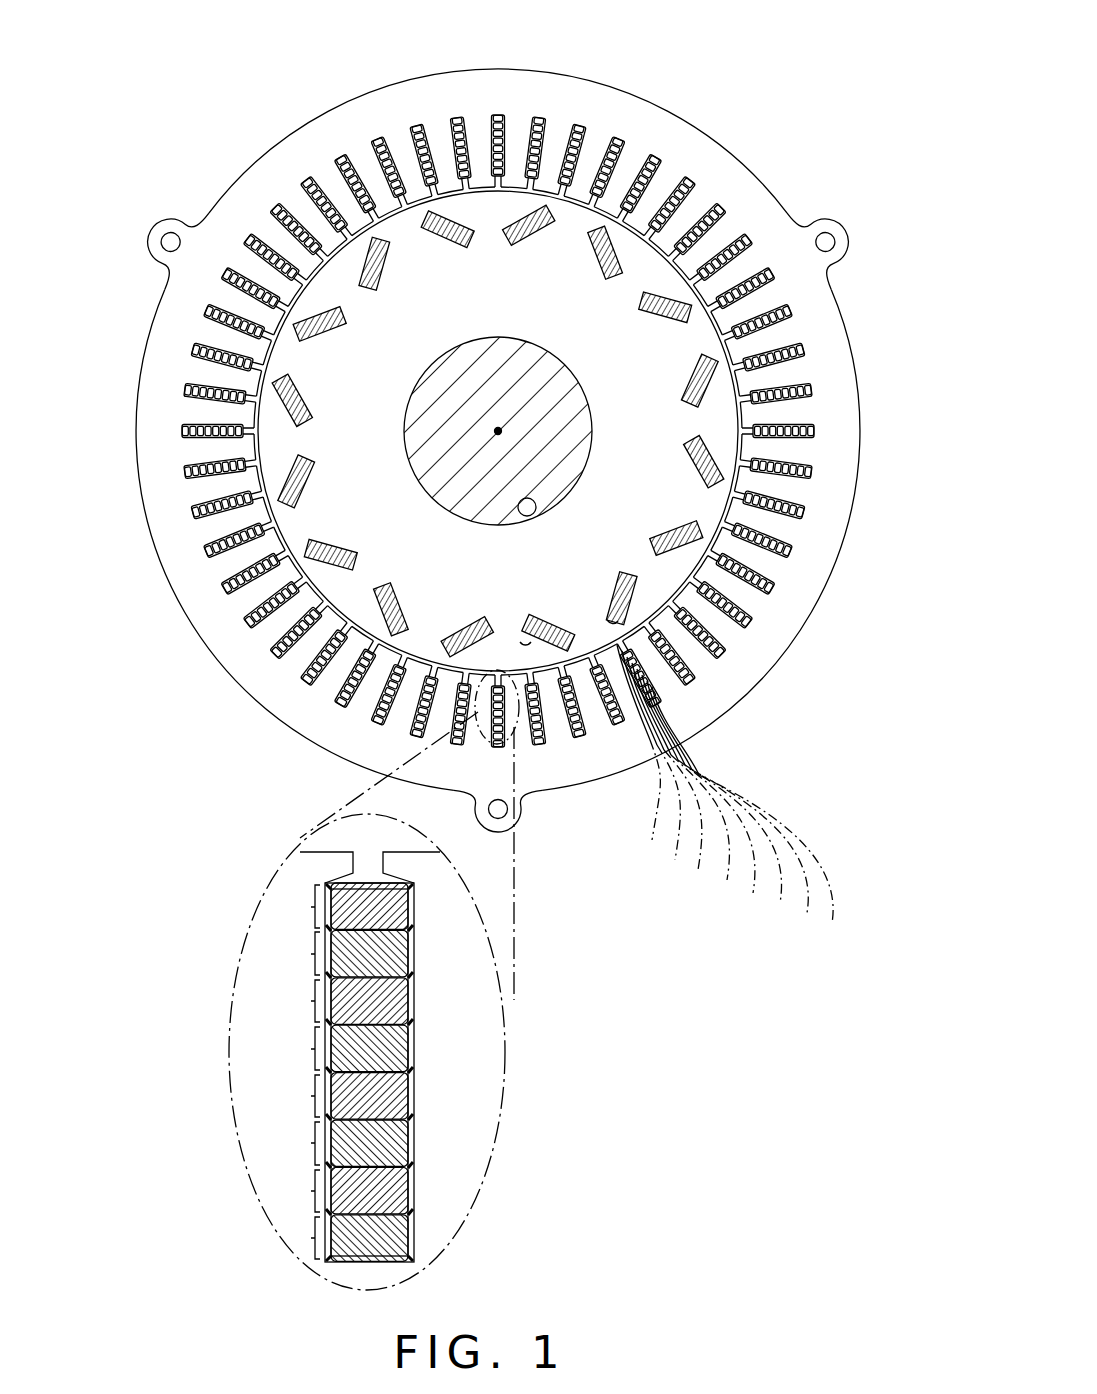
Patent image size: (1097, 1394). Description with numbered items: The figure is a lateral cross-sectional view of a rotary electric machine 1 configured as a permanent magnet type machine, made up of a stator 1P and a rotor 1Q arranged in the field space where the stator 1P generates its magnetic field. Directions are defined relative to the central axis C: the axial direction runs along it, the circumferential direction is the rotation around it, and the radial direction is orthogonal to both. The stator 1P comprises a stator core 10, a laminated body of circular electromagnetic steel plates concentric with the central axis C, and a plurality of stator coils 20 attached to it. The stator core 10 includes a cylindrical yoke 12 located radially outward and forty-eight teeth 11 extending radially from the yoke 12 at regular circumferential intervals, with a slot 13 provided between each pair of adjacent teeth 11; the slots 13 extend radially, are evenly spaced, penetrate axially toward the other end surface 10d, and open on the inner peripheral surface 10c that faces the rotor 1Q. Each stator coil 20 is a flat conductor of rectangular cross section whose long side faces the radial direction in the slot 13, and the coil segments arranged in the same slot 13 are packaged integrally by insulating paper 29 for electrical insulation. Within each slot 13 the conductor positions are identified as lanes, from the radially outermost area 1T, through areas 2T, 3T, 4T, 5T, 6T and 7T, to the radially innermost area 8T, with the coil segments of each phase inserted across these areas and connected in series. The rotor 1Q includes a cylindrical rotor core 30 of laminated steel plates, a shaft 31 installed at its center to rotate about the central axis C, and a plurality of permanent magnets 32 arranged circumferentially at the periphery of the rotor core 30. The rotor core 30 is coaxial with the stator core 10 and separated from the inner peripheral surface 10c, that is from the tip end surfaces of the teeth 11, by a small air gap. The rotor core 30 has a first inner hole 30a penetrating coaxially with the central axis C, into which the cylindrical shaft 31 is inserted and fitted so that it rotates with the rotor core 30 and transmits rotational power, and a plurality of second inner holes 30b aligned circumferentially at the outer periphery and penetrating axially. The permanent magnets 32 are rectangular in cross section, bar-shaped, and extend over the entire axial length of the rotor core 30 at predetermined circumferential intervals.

The rotary electric machine 1 is at (138, 84).
The stator core 10 is at (173, 300).
The inner peripheral surface 10c is at (258, 403).
The other end surface 10d is at (143, 345).
The teeth 11 is at (385, 200).
The yoke 12 is at (186, 578).
The slot 13 is at (342, 156).
The stator coil 20 is at (380, 200).
The insulating paper 29 is at (415, 1118).
The rotor core 30 is at (588, 632).
The first inner hole 30a is at (535, 513).
The second inner holes 30b is at (525, 640).
The shaft 31 is at (459, 455).
The permanent magnets 32 is at (380, 270).
The central axis C is at (501, 432).
The stator 1P is at (268, 725).
The rotor 1Q is at (340, 800).
The area 1T is at (298, 1238).
The area 2T is at (298, 1191).
The area 3T is at (298, 1143).
The area 4T is at (298, 1096).
The area 5T is at (298, 1049).
The area 6T is at (298, 1001).
The area 7T is at (298, 954).
The area 8T is at (298, 907).